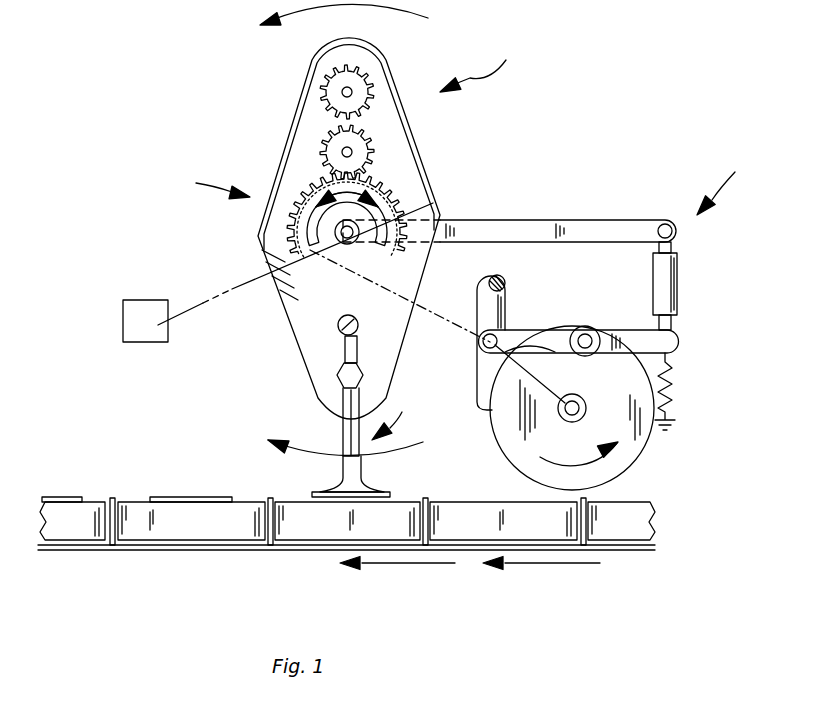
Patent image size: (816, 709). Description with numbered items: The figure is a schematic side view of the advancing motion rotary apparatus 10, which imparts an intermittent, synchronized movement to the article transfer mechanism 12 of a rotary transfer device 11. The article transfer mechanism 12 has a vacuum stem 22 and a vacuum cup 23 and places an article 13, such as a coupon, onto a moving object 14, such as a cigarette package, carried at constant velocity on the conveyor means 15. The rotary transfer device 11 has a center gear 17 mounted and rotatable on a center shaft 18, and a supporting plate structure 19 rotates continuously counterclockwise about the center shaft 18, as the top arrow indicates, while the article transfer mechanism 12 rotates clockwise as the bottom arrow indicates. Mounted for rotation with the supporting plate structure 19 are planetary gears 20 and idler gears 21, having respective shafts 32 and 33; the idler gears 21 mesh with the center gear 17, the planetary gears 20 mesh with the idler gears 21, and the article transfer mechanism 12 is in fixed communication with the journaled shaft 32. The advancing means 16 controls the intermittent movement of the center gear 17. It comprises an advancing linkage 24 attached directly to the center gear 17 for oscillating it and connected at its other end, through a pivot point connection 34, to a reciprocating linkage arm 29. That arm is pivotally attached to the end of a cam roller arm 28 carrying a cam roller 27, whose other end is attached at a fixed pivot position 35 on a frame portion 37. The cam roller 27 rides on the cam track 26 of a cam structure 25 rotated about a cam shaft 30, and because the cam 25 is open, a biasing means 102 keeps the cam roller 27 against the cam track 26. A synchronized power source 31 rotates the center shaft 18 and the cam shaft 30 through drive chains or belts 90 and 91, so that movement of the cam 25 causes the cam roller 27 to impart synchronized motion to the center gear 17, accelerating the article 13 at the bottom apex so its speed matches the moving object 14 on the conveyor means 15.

The advancing motion rotary apparatus 10 is at (489, 64).
The rotary transfer device 11 is at (206, 184).
The article transfer mechanism 12 is at (400, 420).
The article 13 is at (218, 497).
The moving object 14 is at (172, 533).
The conveyor means 15 is at (112, 548).
The advancing means 16 is at (731, 182).
The center gear 17 is at (318, 241).
The center shaft 18 is at (336, 266).
The supporting plate structure 19 is at (410, 182).
The planetary gears 20 is at (330, 92).
The idler gears 21 is at (330, 152).
The vacuum stem 22 is at (344, 424).
The vacuum cup 23 is at (343, 478).
The advancing linkage 24 is at (512, 222).
The cam structure 25 is at (640, 432).
The cam track 26 is at (612, 356).
The cam roller 27 is at (585, 327).
The cam roller arm 28 is at (628, 333).
The reciprocating linkage arm 29 is at (668, 283).
The cam shaft 30 is at (582, 400).
The power source 31 is at (128, 318).
The journaled shaft 32 is at (353, 90).
The shaft 33 is at (355, 150).
The pivot point connection 34 is at (665, 224).
The fixed pivot position 35 is at (498, 336).
The frame portion 37 is at (500, 293).
The drive chain 90 is at (232, 292).
The drive chain 91 is at (470, 330).
The biasing means 102 is at (672, 398).